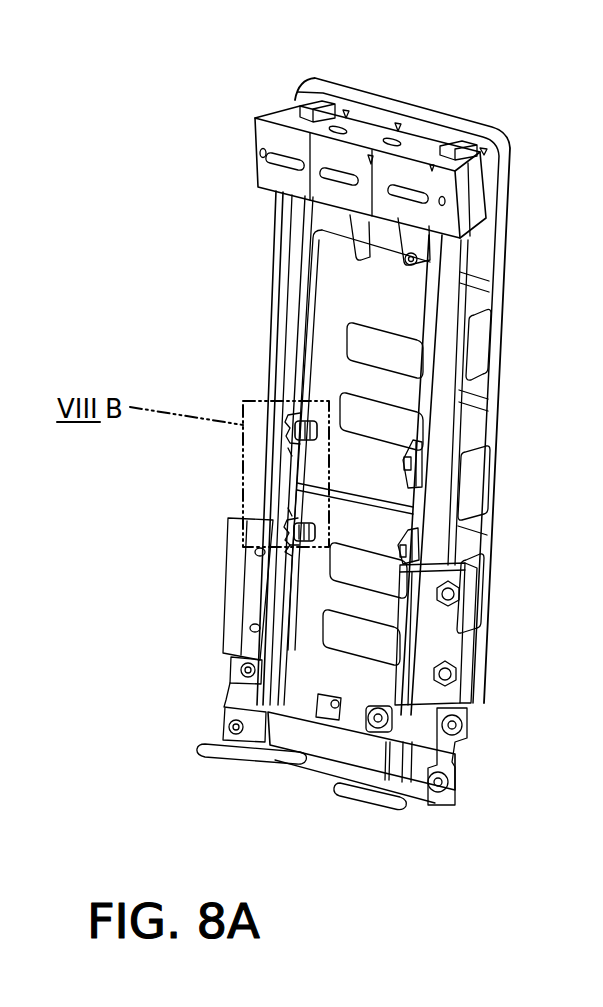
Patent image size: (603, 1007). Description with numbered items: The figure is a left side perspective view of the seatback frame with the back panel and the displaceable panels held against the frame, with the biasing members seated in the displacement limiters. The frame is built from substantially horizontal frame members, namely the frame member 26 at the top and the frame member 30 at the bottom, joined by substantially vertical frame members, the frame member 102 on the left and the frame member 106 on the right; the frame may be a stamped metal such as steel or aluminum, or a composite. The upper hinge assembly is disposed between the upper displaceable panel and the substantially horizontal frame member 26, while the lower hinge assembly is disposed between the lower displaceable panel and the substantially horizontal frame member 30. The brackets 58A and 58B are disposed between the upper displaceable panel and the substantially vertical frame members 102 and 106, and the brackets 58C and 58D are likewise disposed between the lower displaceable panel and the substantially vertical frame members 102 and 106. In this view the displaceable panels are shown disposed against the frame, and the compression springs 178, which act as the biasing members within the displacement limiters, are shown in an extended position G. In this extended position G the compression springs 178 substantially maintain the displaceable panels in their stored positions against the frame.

The frame member 26 is at (402, 168).
The frame member 30 is at (335, 747).
The frame member 102 is at (292, 293).
The frame member 106 is at (453, 302).
The compression spring 178 is at (307, 405).
The bracket 58A is at (290, 433).
The bracket 58B is at (407, 463).
The bracket 58C is at (280, 530).
The bracket 58D is at (400, 548).
The extended position G is at (290, 450).